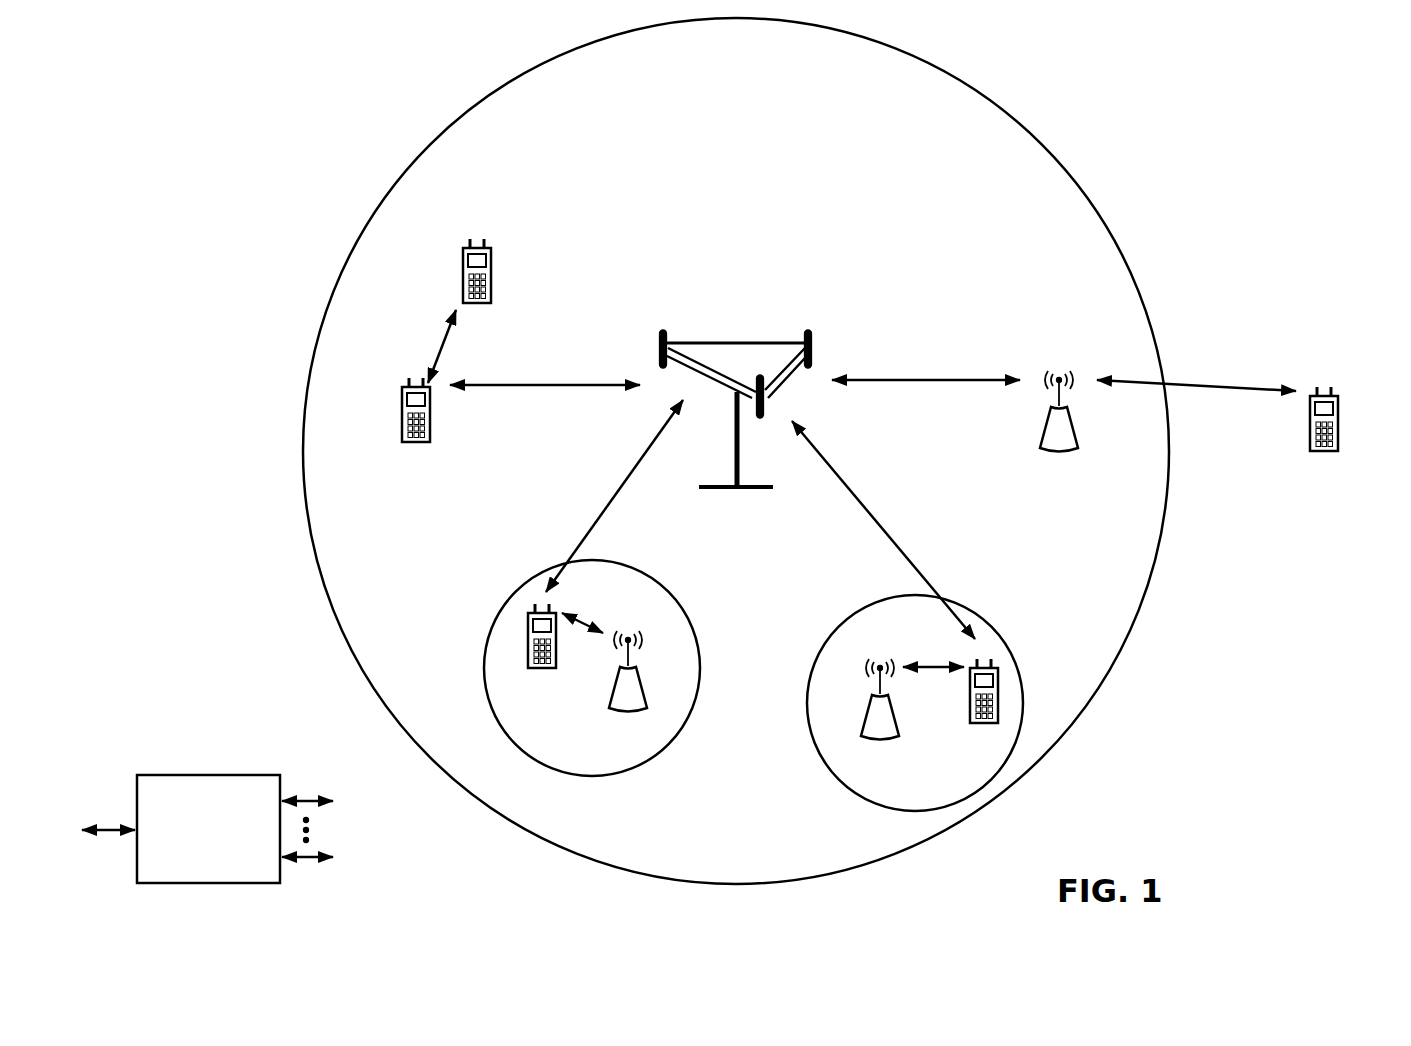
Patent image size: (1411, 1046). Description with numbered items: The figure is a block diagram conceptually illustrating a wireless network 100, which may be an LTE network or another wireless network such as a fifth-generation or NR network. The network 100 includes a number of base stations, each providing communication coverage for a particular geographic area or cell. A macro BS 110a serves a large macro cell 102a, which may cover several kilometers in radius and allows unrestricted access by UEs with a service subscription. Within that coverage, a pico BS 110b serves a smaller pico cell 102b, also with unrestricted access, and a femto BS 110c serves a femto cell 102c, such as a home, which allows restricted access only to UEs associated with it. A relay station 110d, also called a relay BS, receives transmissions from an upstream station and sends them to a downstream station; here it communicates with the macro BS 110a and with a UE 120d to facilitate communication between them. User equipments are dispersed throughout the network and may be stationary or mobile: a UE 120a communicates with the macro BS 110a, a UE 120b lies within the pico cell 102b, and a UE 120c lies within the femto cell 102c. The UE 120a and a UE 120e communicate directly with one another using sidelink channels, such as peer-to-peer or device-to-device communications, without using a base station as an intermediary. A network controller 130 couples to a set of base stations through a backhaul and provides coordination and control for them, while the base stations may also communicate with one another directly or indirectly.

The wireless network 100 is at (1222, 104).
The macro cell 102a is at (1021, 130).
The pico cell 102b is at (676, 594).
The femto cell 102c is at (832, 629).
The macro BS 110a is at (741, 343).
The pico BS 110b is at (645, 695).
The femto BS 110c is at (862, 718).
The relay station 110d is at (1061, 372).
The UE 120a is at (402, 398).
The UE 120b is at (528, 660).
The UE 120c is at (970, 718).
The UE 120d is at (1338, 410).
The UE 120e is at (463, 254).
The network controller 130 is at (207, 775).